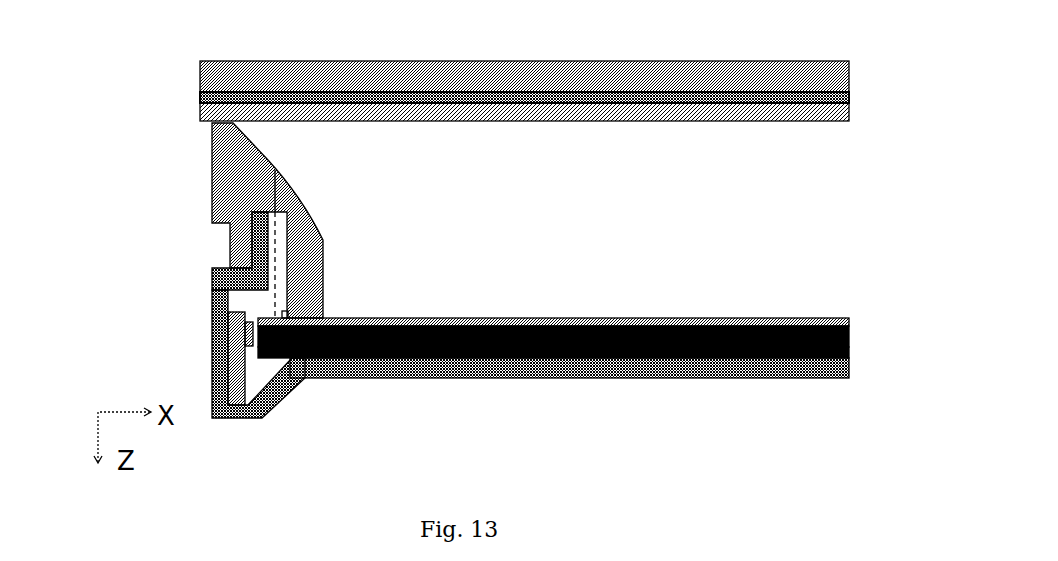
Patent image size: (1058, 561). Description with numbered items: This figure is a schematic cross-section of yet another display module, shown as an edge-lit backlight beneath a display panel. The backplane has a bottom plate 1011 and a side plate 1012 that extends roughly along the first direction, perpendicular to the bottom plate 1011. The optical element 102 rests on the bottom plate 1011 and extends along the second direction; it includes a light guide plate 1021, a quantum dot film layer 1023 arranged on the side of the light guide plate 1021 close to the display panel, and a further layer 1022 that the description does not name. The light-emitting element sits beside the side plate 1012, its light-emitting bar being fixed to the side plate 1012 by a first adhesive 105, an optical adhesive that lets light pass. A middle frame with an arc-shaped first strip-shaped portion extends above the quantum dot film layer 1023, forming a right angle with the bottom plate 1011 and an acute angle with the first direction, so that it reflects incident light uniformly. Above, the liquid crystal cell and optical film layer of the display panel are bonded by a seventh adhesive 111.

The seventh adhesive 111 is at (573, 92).
The side plate 1012 is at (222, 278).
The first adhesive 105 is at (227, 405).
The optical element 102 is at (807, 215).
The light guide plate 1021 is at (541, 325).
The back film layer 1022 is at (648, 330).
The quantum dot film layer 1023 is at (758, 320).
The bottom plate 1011 is at (580, 368).